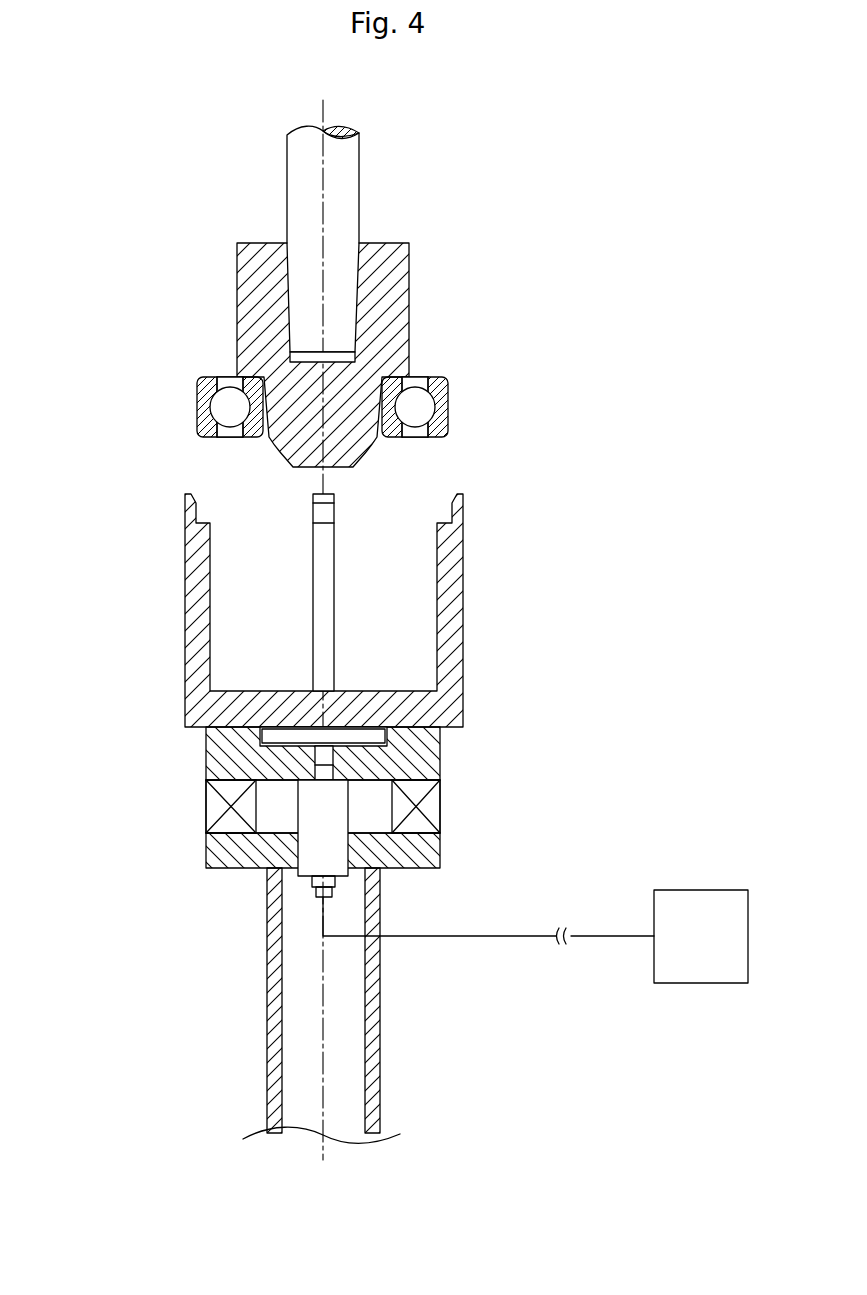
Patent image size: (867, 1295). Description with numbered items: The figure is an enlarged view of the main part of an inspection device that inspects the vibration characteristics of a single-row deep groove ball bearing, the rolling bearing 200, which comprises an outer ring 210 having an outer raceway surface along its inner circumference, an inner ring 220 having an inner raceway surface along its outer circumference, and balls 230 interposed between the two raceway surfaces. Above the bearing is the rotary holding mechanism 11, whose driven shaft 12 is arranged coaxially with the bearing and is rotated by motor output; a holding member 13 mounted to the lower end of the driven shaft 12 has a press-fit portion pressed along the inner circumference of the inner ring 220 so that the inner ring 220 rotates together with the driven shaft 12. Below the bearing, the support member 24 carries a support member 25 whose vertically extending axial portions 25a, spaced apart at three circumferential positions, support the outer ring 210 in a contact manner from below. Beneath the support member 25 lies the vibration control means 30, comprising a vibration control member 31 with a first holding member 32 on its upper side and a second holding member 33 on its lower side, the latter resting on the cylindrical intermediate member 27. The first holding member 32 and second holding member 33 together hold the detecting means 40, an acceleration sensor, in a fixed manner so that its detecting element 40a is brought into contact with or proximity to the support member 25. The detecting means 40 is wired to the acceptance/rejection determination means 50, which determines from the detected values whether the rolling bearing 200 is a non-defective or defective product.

The rotary holding mechanism 11 is at (244, 135).
The driven shaft 12 is at (345, 177).
The holding member 13 is at (400, 300).
The rolling bearing 200 is at (156, 411).
The outer ring 210 is at (208, 380).
The inner ring 220 is at (250, 434).
The balls 230 is at (425, 410).
The support member 24 is at (500, 670).
The support member 25 is at (171, 631).
The axial portions 25a is at (317, 607).
The vibration control means 30 is at (151, 845).
The vibration control member 31 is at (215, 808).
The first holding member 32 is at (215, 760).
The second holding member 33 is at (230, 860).
The detecting means 40 is at (349, 823).
The detecting element 40a is at (349, 761).
The intermediate member 27 is at (270, 1015).
The acceptance/rejection determination means 50 is at (700, 908).